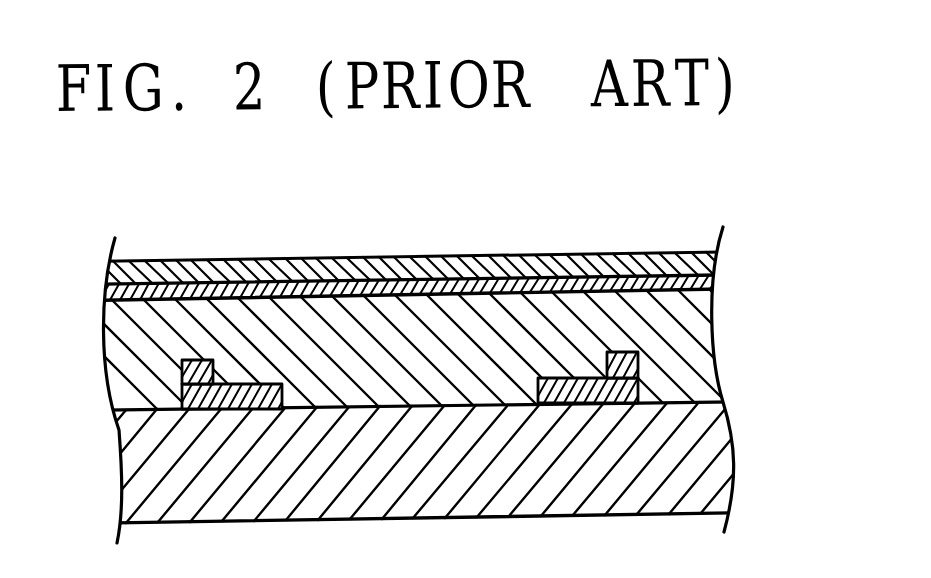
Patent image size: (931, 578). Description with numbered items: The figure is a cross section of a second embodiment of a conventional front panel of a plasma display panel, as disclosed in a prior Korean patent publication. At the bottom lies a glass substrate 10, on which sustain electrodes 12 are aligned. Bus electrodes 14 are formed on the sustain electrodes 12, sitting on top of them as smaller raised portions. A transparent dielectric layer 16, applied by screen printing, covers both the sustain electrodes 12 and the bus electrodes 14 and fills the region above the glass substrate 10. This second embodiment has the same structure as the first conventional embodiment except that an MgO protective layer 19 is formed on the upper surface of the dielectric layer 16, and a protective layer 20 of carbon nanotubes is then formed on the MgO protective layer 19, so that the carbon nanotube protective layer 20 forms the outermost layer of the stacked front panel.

The glass substrate 10 is at (720, 472).
The sustain electrodes 12 is at (645, 397).
The bus electrodes 14 is at (640, 368).
The transparent dielectric layer 16 is at (680, 318).
The MgO protective layer 19 is at (714, 282).
The protective layer of carbon nanotubes 20 is at (716, 259).